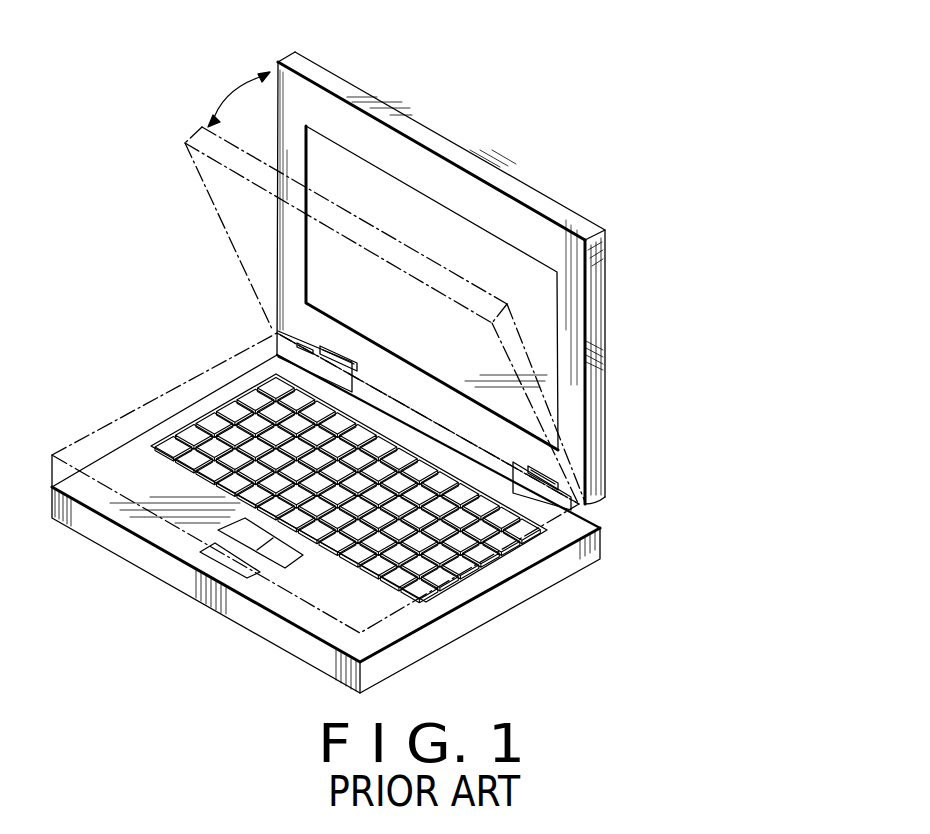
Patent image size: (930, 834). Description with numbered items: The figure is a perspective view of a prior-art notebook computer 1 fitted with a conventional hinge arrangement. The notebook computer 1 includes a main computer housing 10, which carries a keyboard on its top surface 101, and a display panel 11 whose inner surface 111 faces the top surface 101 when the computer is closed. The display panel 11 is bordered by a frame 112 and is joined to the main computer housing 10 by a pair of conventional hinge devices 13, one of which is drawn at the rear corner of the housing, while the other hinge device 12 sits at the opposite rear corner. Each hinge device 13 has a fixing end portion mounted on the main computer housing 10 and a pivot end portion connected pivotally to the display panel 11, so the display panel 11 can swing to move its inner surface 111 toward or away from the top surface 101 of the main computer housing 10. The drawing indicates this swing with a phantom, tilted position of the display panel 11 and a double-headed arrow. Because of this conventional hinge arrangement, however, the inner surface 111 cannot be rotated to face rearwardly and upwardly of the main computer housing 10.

The notebook computer 1 is at (150, 298).
The main computer housing 10 is at (422, 643).
The top surface 101 is at (325, 600).
The display panel 11 is at (577, 347).
The inner surface 111 is at (337, 163).
The display frame 112 is at (483, 158).
The hinge 12 is at (567, 503).
The conventional hinge devices 13 is at (288, 360).